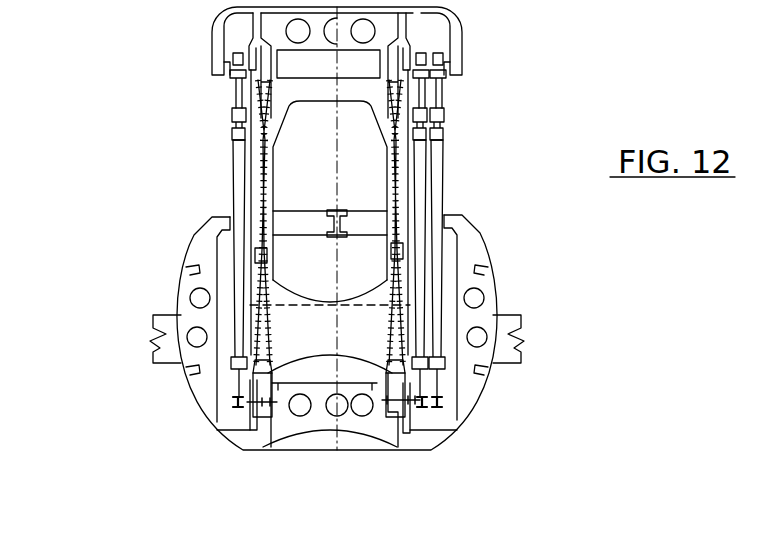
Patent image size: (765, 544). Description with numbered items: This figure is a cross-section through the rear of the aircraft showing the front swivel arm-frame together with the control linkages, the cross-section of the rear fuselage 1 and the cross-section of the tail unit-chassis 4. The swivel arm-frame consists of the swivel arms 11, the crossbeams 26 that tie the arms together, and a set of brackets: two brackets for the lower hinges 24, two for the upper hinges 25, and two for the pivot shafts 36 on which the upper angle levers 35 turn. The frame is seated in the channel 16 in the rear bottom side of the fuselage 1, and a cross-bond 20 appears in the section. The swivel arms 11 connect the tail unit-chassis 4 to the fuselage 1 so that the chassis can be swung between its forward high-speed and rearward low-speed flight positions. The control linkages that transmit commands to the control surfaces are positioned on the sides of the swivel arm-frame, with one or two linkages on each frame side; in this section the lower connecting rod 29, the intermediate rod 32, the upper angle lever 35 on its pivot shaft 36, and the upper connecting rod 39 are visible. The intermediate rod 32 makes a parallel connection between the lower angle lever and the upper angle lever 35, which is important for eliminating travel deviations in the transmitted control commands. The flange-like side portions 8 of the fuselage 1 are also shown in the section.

The fuselage 1 is at (470, 383).
The tail unit-chassis 4 is at (217, 23).
The side flange 8 is at (530, 342).
The front swivel arms 11 is at (255, 197).
The channel in the rear bottom side of the fuselage 16 is at (320, 432).
The cross-bond 20 is at (337, 210).
The lower hinges of the swivel arms 24 is at (253, 408).
The upper hinges of the swivel arms 25 is at (250, 40).
The crossbeams of the swivel arm-frames 26 is at (352, 325).
The lower connecting rod 29 is at (235, 402).
The intermediate rod 32 is at (236, 187).
The upper angle lever 35 is at (237, 97).
The pivot shaft for the upper angle lever 36 is at (232, 116).
The upper connecting rod 39 is at (234, 60).